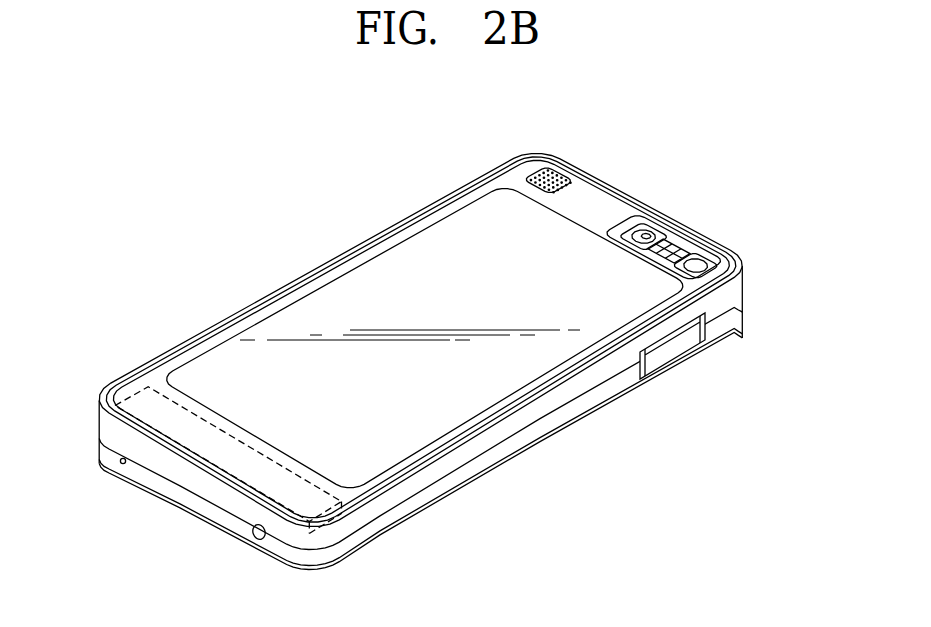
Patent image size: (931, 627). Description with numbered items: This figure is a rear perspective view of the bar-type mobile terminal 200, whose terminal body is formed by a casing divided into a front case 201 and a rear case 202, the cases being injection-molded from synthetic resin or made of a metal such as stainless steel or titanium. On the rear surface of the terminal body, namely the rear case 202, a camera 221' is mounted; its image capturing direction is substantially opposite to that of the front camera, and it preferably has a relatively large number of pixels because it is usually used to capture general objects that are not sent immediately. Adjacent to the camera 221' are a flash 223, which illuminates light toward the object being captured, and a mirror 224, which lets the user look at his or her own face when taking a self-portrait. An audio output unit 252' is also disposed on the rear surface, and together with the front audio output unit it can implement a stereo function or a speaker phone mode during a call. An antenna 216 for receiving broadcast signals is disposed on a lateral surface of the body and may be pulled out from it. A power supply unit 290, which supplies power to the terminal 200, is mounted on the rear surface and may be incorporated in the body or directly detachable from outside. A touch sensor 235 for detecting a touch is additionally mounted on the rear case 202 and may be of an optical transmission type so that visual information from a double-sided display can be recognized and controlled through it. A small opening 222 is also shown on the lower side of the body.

The mobile terminal 200 is at (378, 198).
The front case 201 is at (735, 318).
The rear case 202 is at (735, 297).
The antenna 216 is at (256, 536).
The camera 221' is at (669, 211).
The microphone hole 222 is at (121, 463).
The flash 223 is at (668, 250).
The mirror 224 is at (692, 262).
The touch sensor 235 is at (343, 292).
The audio output unit 252' is at (588, 159).
The power supply unit 290 is at (130, 398).